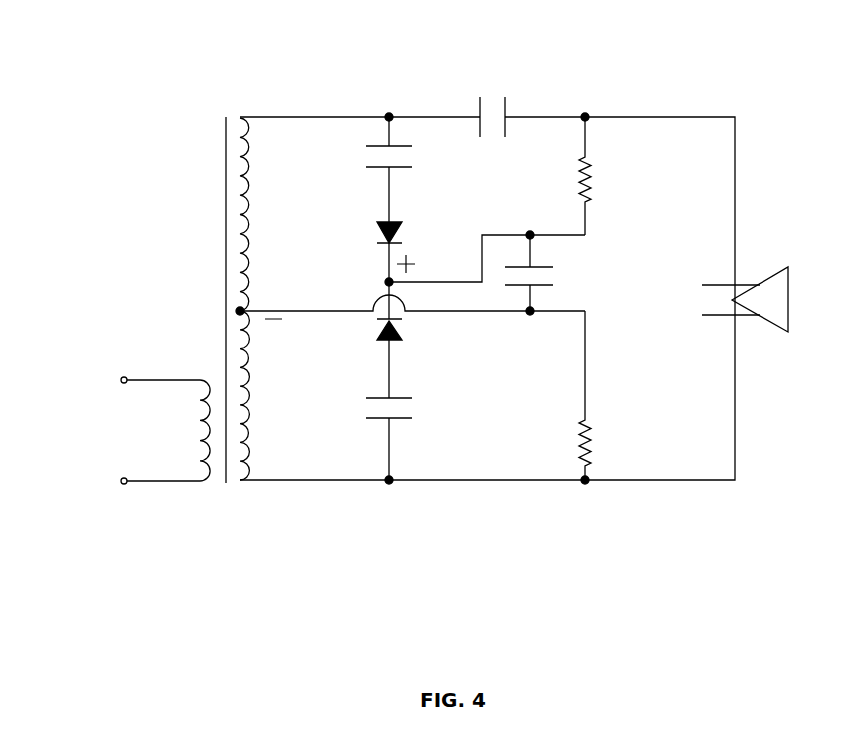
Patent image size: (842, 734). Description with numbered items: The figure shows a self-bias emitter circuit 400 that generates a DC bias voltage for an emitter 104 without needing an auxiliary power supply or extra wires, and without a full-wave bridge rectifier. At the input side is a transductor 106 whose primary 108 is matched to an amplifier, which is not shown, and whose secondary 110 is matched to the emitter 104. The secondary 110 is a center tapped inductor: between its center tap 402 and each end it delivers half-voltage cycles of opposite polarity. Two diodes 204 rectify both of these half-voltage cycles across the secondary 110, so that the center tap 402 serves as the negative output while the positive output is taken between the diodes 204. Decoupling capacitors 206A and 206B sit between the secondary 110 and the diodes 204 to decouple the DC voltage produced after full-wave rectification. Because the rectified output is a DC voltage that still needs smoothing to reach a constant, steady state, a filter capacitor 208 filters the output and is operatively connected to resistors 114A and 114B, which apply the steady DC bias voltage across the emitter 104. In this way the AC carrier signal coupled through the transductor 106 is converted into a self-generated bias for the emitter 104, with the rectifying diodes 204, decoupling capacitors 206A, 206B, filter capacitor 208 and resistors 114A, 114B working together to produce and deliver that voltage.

The self-bias emitter circuit 400 is at (125, 117).
The emitter 104 is at (775, 282).
The transductor 106 is at (225, 495).
The primary 108 is at (200, 375).
The secondary 110 is at (243, 118).
The center tap 402 is at (245, 308).
The diodes 204 is at (400, 232).
The decoupling capacitor 206A is at (400, 146).
The decoupling capacitor 206B is at (380, 420).
The filter capacitor 208 is at (505, 103).
The resistor 114A is at (585, 177).
The resistor 114B is at (590, 440).